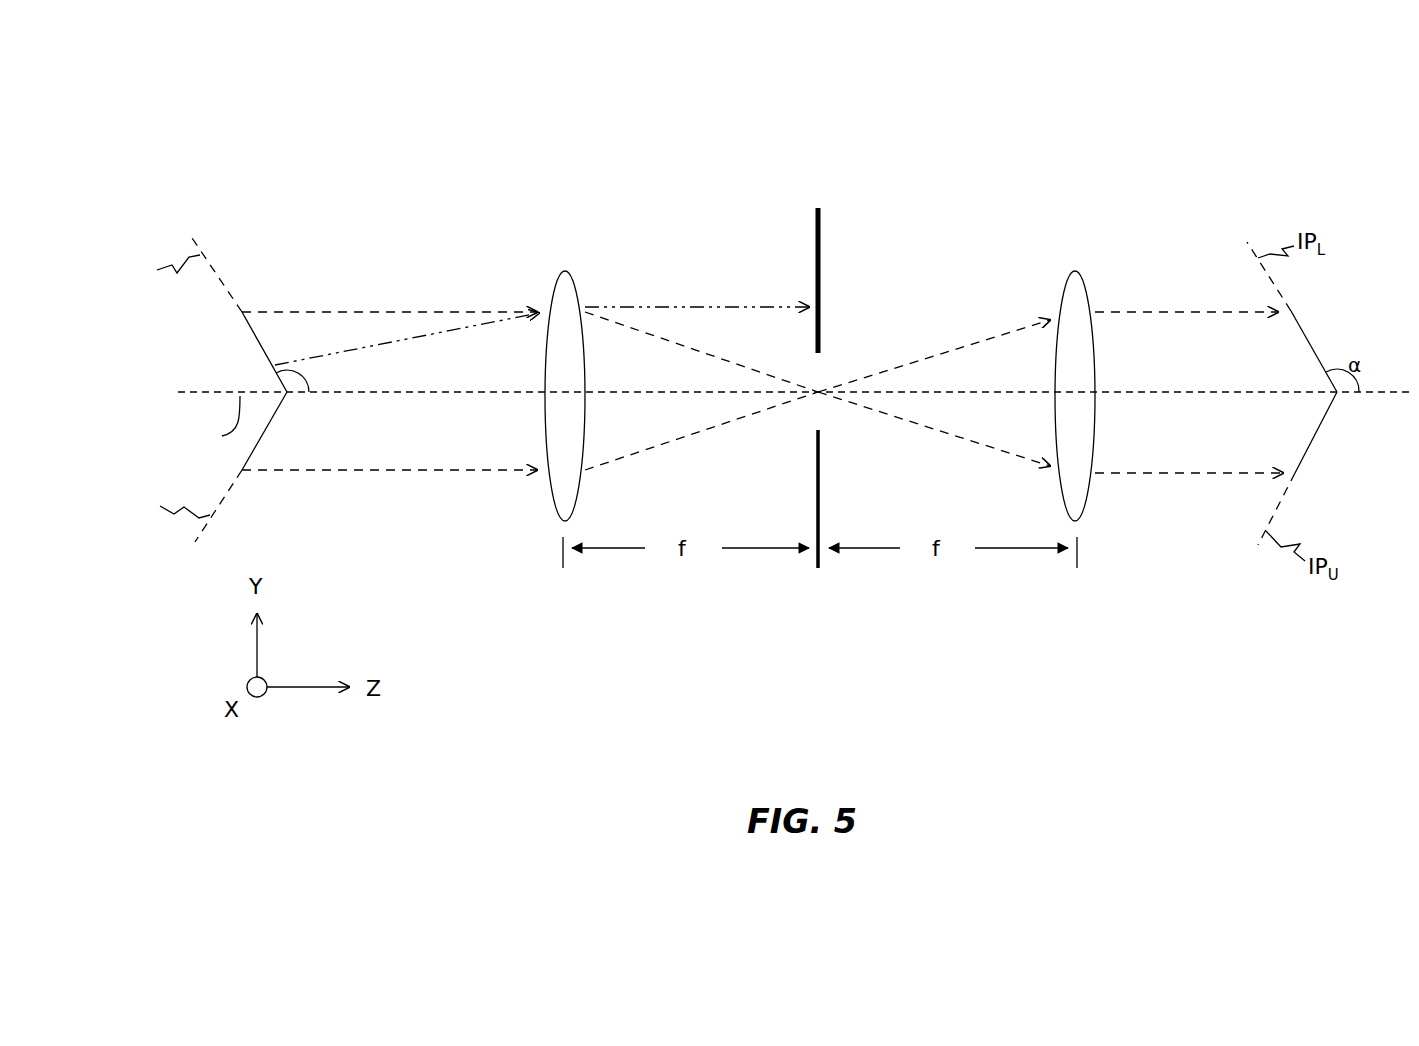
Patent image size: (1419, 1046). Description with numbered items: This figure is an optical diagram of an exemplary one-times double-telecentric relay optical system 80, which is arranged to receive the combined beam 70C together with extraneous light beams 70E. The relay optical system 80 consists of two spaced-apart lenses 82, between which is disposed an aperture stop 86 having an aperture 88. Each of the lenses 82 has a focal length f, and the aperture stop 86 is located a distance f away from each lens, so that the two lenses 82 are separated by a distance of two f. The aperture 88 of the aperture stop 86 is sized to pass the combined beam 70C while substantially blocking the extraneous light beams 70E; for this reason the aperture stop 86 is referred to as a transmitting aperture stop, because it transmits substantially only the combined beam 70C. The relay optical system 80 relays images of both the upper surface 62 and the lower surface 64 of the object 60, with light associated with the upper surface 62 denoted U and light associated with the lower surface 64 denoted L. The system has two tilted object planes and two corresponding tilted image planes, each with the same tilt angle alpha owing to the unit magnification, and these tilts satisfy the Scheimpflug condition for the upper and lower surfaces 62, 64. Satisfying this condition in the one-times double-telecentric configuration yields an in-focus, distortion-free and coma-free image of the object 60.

The relay optical system 80 is at (331, 166).
The object 60 is at (221, 388).
The upper surface 62 is at (266, 328).
The lower surface 64 is at (271, 452).
The combined beam 70C is at (396, 474).
The extraneous light beams 70E is at (632, 307).
The lenses 82 is at (565, 271).
The aperture stop 86 is at (815, 251).
The aperture 88 is at (817, 374).